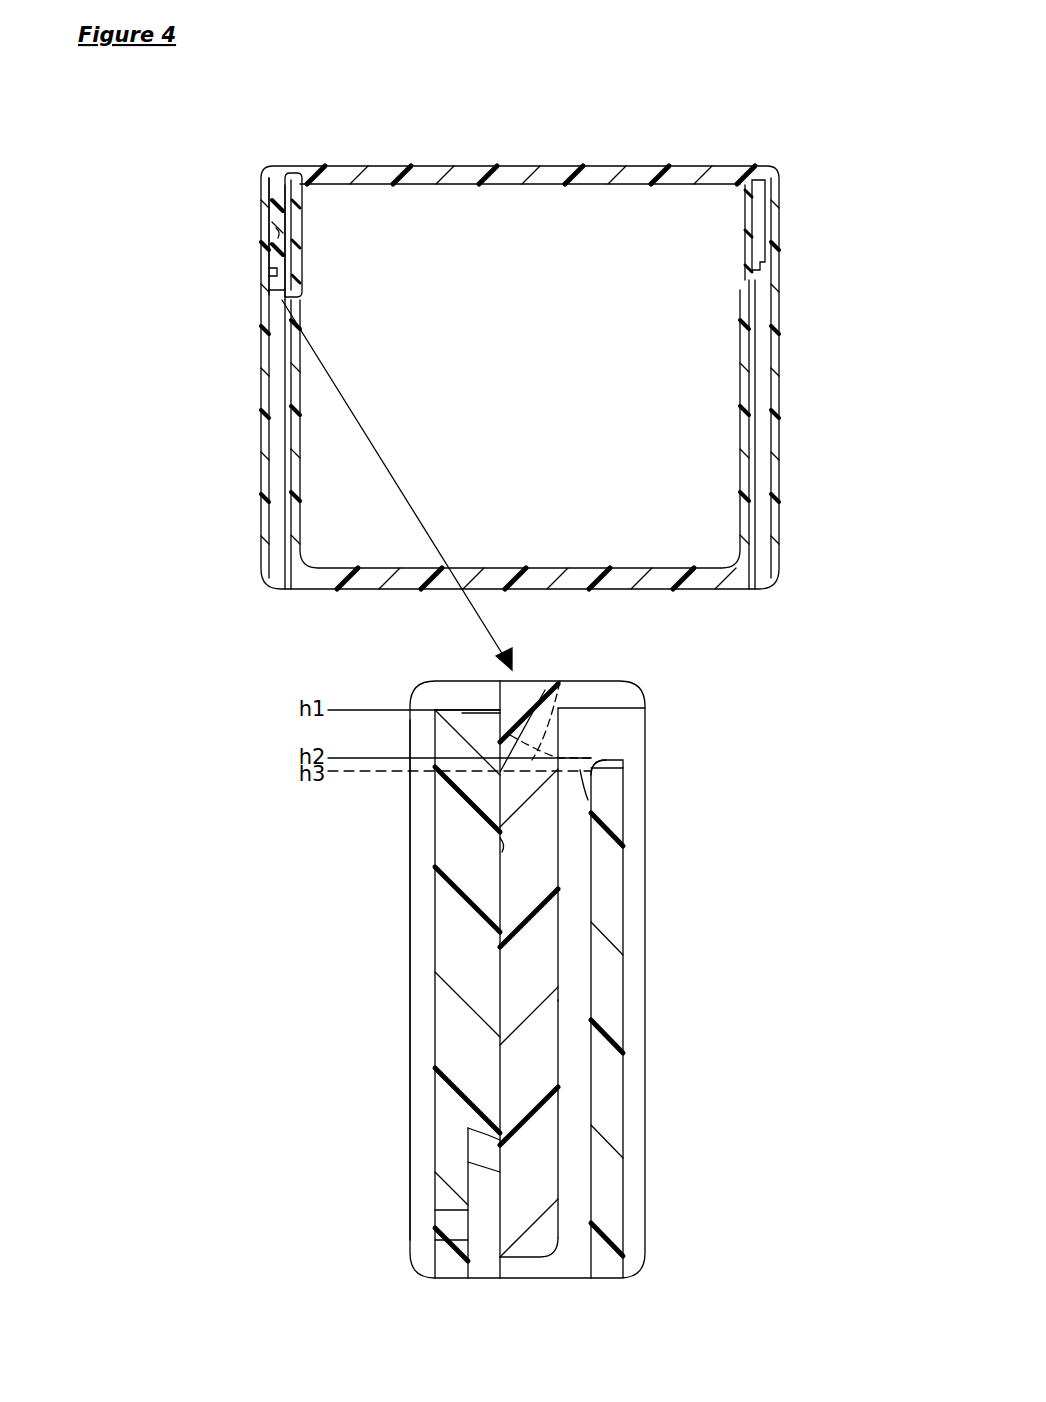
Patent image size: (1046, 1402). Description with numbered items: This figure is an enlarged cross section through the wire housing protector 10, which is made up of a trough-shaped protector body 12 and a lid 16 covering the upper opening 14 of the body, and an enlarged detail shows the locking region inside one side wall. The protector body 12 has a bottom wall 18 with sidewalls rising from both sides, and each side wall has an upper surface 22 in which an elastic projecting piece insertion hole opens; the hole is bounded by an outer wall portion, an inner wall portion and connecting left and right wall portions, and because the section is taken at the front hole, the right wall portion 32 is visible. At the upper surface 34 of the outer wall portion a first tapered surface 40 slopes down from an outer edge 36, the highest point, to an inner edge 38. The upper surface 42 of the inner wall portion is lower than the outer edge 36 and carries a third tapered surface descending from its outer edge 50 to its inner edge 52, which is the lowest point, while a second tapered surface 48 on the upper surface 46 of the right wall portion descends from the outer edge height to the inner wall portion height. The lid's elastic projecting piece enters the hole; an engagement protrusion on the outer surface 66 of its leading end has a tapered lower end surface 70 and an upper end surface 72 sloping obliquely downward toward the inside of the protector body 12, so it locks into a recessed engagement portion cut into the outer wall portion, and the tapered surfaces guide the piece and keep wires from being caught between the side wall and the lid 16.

The wire housing protector 10 is at (496, 88).
The protector body 12 is at (675, 614).
The upper opening 14 is at (300, 222).
The lid 16 is at (522, 136).
The bottom wall 18 is at (510, 578).
The upper surface of the side wall 22 is at (487, 702).
The right wall portion 32 is at (480, 728).
The upper surface of the outer wall portion 34 is at (470, 708).
The outer edge 36 is at (440, 710).
The inner edge 38 is at (506, 768).
The first tapered surface 40 is at (268, 182).
The upper surface of the inner wall portion 42 is at (593, 768).
The upper surface of the right wall portion 46 is at (500, 688).
The second tapered surface 48 is at (560, 681).
The outer edge 50 is at (593, 773).
The inner edge 52 is at (583, 792).
The outer surface of the elastic projecting piece 66 is at (497, 916).
The lower end surface of the engagement protrusion 70 is at (482, 1240).
The upper end surface of the engagement protrusion 72 is at (498, 1150).